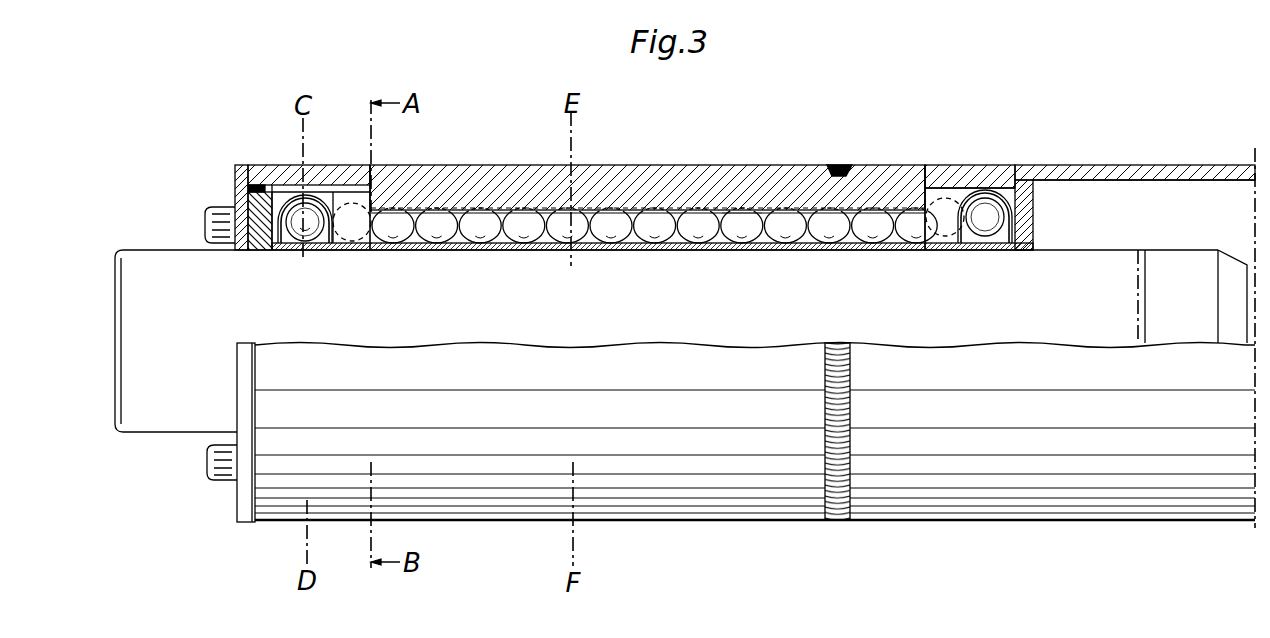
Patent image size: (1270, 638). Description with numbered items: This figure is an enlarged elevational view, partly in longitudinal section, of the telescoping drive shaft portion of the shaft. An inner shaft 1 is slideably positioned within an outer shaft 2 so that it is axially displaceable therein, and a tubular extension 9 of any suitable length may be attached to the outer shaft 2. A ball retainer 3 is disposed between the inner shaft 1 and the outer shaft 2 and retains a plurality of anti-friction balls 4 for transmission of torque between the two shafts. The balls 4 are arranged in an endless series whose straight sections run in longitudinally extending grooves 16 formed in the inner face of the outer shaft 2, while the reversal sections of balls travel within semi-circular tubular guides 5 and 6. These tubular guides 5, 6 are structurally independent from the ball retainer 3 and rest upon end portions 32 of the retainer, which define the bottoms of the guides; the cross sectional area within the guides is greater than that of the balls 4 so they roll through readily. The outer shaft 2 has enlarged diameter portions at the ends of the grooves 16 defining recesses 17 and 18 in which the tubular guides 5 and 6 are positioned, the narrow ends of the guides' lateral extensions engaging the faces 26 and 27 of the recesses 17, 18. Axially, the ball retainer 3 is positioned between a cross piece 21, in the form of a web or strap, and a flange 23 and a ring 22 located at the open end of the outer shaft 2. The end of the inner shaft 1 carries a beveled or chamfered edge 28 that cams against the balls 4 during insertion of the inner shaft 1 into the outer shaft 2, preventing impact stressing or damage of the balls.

The inner shaft 1 is at (157, 410).
The outer shaft 2 is at (665, 178).
The ball retainer 3 is at (400, 250).
The anti-friction balls 4 is at (527, 213).
The tubular guide 5 is at (947, 220).
The tubular guide 6 is at (348, 190).
The tubular extension 9 is at (1064, 172).
The longitudinally extending grooves 16 is at (722, 212).
The recess 17 is at (975, 186).
The recess 18 is at (287, 190).
The cross piece 21 is at (1034, 214).
The ring 22 is at (249, 203).
The flange 23 is at (245, 168).
The face of recess 26 is at (928, 205).
The face of recess 27 is at (375, 196).
The beveled or chamfered edge 28 is at (1233, 262).
The end portions of ball retainer 32 is at (1000, 242).